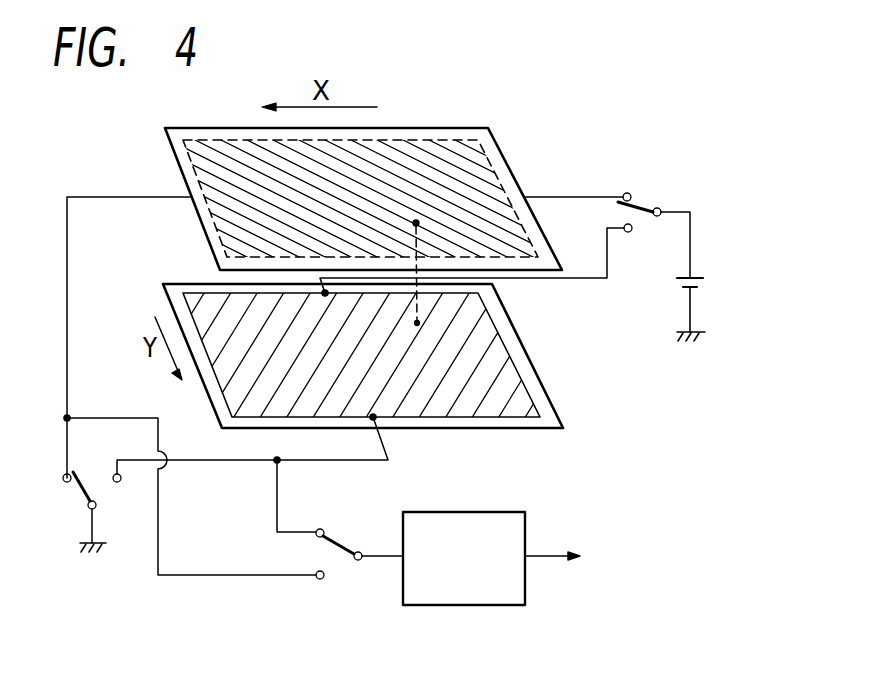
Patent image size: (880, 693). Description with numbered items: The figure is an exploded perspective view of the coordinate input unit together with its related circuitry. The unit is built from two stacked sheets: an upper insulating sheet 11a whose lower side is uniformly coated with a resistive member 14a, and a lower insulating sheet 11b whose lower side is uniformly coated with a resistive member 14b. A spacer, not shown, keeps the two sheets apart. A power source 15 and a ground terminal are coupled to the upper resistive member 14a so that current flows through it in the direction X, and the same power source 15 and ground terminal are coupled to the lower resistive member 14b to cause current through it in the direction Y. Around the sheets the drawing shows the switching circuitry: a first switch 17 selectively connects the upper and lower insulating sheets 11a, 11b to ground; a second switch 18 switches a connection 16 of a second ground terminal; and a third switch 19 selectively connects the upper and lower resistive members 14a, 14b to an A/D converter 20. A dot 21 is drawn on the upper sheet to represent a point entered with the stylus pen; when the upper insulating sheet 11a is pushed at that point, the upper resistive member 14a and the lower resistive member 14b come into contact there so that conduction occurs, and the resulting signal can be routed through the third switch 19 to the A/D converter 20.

The upper insulating sheet 11a is at (482, 128).
The resistive member 14a is at (505, 148).
The lower insulating sheet 11b is at (535, 387).
The resistive member 14b is at (498, 350).
The power source 15 is at (702, 275).
The connection 16 is at (92, 522).
The first switch 17 is at (641, 193).
The second switch 18 is at (100, 488).
The third switch 19 is at (338, 560).
The A/D converter 20 is at (507, 512).
The dot 21 is at (416, 223).